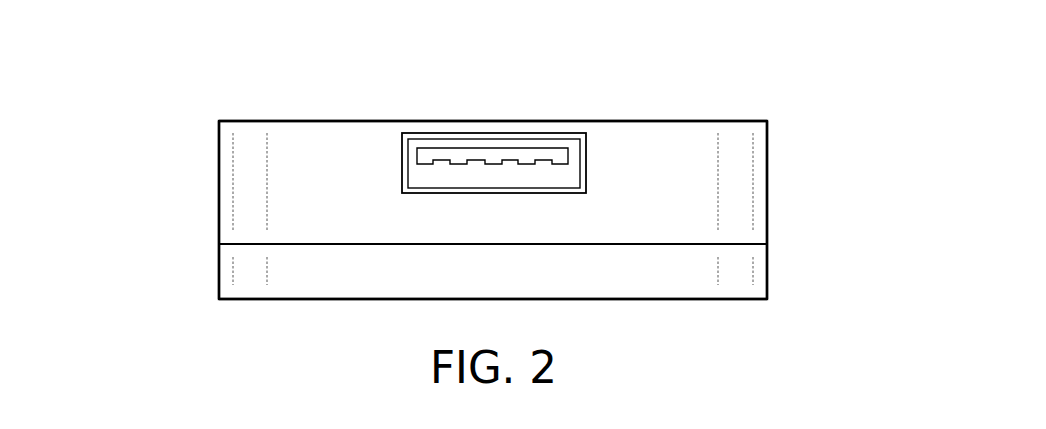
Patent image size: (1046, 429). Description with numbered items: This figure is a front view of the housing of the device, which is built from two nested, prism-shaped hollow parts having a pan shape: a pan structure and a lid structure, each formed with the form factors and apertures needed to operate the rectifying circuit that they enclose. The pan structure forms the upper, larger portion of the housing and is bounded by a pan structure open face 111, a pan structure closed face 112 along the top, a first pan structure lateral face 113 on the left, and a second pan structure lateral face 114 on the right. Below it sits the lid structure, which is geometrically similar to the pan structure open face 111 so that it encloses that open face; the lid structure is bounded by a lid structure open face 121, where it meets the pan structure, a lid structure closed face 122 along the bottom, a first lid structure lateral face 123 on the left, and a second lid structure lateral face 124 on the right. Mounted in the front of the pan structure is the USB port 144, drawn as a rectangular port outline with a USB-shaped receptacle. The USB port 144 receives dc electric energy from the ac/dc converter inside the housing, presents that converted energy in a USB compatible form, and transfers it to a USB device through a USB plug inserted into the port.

The pan structure open face 111 is at (697, 243).
The pan structure closed face 112 is at (683, 120).
The first pan structure lateral face 113 is at (219, 167).
The second pan structure lateral face 114 is at (767, 198).
The lid structure open face 121 is at (317, 244).
The lid structure closed face 122 is at (283, 300).
The first lid structure lateral face 123 is at (219, 272).
The second lid structure lateral face 124 is at (767, 268).
The USB port 144 is at (513, 157).